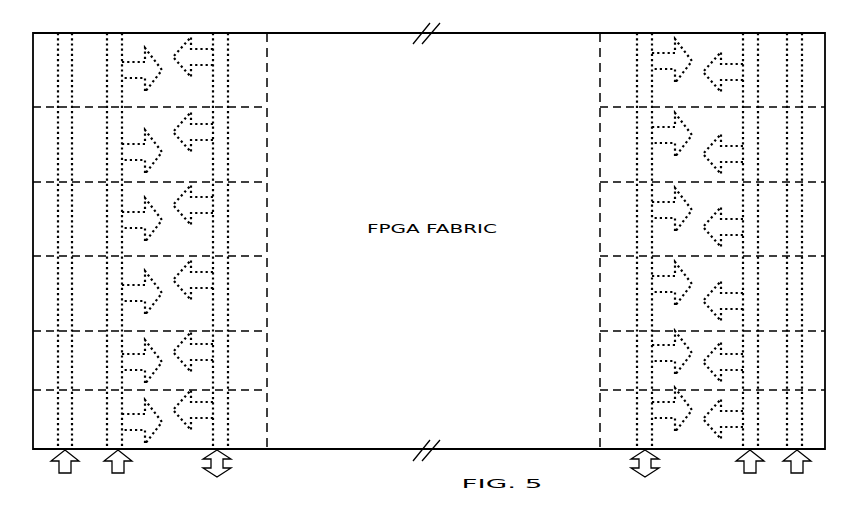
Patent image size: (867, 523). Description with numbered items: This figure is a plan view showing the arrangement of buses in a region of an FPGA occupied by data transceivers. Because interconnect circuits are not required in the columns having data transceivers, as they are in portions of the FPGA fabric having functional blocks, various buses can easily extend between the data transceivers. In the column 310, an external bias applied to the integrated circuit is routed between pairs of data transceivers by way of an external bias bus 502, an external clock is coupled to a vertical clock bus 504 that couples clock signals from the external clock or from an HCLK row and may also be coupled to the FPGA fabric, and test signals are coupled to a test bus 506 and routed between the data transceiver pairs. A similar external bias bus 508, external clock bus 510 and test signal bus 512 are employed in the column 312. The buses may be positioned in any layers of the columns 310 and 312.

The column 310 is at (35, 33).
The column 312 is at (820, 33).
The external bias bus 502 is at (67, 42).
The vertical clock bus 504 is at (120, 43).
The test bus 506 is at (228, 48).
The external bias bus 508 is at (795, 32).
The external clock bus 510 is at (780, 15).
The test signal bus 512 is at (647, 33).